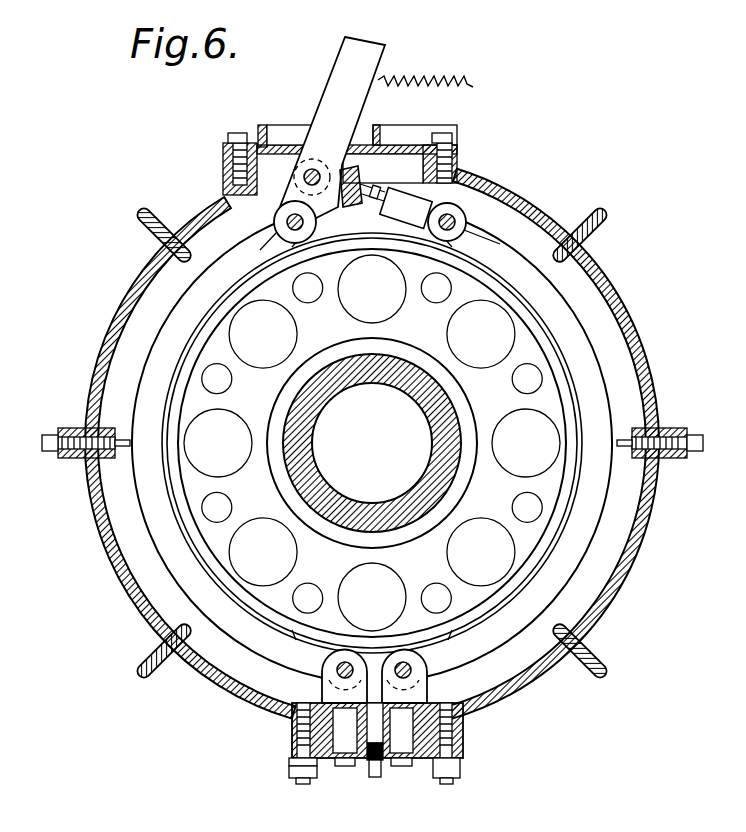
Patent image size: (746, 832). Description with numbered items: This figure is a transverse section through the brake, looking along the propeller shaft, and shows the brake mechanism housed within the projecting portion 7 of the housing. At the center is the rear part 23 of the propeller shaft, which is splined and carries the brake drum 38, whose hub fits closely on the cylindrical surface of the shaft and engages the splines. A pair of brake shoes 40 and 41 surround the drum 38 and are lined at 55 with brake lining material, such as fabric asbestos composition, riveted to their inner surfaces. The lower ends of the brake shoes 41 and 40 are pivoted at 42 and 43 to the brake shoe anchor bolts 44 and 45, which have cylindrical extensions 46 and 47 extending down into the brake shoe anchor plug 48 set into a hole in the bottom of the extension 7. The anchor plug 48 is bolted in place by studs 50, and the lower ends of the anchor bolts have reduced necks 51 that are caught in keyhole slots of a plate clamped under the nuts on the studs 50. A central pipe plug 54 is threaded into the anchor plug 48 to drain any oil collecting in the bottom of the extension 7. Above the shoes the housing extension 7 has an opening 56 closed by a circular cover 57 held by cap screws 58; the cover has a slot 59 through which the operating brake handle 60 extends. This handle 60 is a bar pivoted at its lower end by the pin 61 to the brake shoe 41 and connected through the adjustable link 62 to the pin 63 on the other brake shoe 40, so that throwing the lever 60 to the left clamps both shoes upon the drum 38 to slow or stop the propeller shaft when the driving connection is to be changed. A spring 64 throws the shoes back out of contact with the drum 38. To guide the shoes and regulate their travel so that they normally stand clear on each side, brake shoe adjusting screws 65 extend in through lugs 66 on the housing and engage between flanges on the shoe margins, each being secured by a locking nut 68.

The projecting portion of the housing 7 is at (521, 195).
The rear part of the propeller shaft 23 is at (418, 490).
The brake drum 38 is at (547, 477).
The brake shoe 40 is at (587, 340).
The brake shoe 41 is at (150, 355).
The pivot 42 is at (433, 684).
The pivot 43 is at (325, 674).
The brake shoe anchor bolt 44 is at (424, 694).
The brake shoe anchor bolt 45 is at (330, 692).
The cylindrical extension 46 is at (456, 746).
The cylindrical extension 47 is at (296, 736).
The brake shoe anchor plug 48 is at (288, 760).
The stud 50 is at (303, 784).
The reduced neck 51 is at (347, 768).
The central pipe plug 54 is at (375, 780).
The brake lining 55 is at (195, 322).
The opening 56 is at (287, 144).
The circular cover 57 is at (415, 152).
The cap screw 58 is at (234, 133).
The slot 59 is at (300, 128).
The operating brake handle 60 is at (368, 46).
The pin 61 is at (287, 222).
The adjustable link 62 is at (410, 200).
The pin 63 is at (454, 215).
The spring 64 is at (392, 88).
The brake shoe adjusting screw 65 is at (44, 441).
The lug 66 is at (78, 430).
The locking nut 68 is at (54, 456).